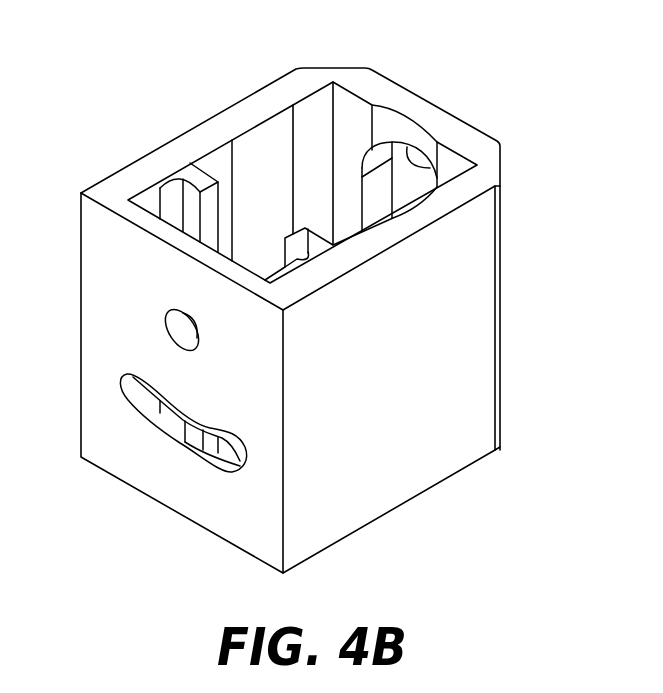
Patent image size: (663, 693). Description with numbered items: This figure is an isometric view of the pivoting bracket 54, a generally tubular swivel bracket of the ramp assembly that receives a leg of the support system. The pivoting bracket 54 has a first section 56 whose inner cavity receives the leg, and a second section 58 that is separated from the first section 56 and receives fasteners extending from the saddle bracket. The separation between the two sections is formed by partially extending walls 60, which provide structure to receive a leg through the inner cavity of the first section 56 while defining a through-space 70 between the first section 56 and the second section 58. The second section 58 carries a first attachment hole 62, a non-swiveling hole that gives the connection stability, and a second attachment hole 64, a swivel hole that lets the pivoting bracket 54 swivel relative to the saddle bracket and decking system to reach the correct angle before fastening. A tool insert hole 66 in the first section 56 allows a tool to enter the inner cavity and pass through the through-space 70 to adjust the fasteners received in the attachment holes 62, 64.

The pivoting bracket 54 is at (467, 68).
The first section 56 is at (343, 112).
The second section 58 is at (149, 193).
The partially extending walls 60 is at (216, 192).
The first attachment hole 62 is at (175, 330).
The second attachment hole 64 is at (142, 415).
The tool insert hole 66 is at (428, 170).
The through-space 70 is at (285, 238).